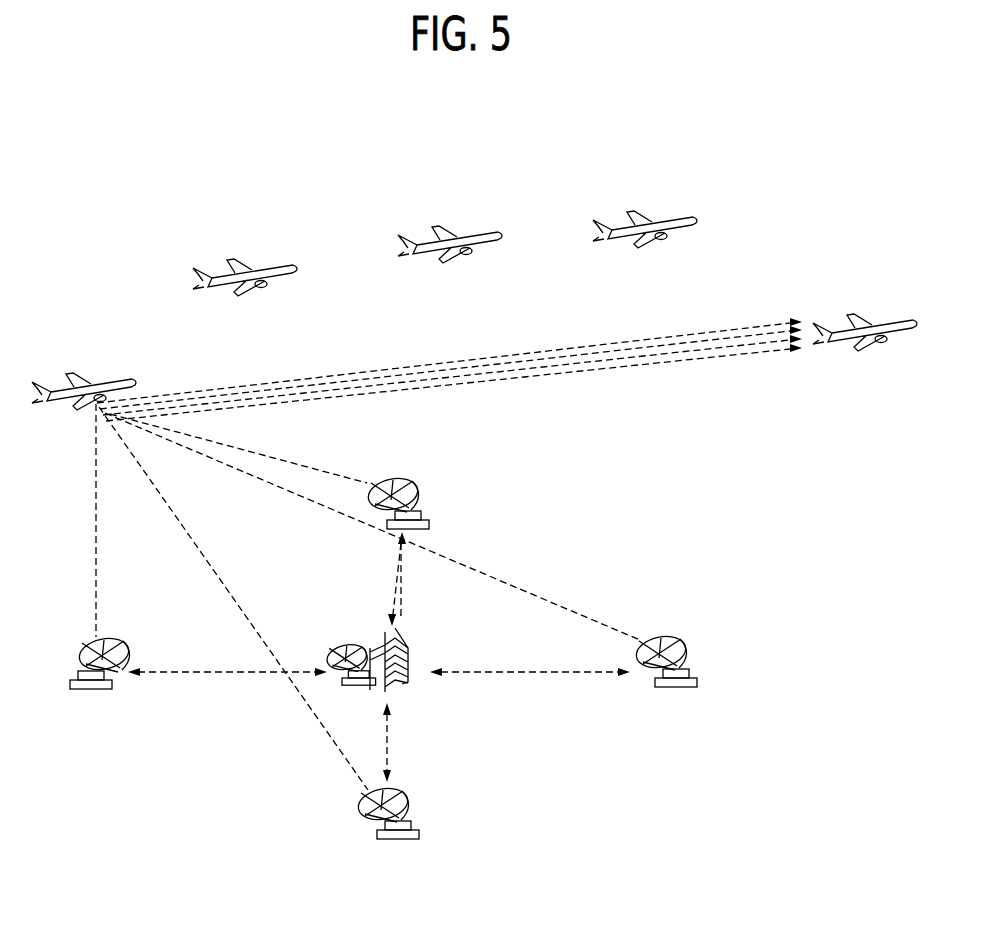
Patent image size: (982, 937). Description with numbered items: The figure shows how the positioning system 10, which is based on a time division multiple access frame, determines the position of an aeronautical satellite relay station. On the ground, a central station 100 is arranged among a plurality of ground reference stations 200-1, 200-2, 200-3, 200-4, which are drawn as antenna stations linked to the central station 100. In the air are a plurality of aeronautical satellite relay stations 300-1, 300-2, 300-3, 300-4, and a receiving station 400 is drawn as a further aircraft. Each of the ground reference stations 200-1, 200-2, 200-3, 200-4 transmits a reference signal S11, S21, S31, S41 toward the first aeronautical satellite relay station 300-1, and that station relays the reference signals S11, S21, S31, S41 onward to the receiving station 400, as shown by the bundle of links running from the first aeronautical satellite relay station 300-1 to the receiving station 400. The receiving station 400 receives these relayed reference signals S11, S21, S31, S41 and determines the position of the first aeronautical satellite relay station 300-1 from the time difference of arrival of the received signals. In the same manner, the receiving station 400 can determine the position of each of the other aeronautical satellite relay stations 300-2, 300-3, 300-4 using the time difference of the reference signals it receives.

The positioning system 10 is at (960, 121).
The central station 100 is at (405, 684).
The ground reference station 200-1 is at (77, 668).
The ground reference station 200-2 is at (410, 838).
The ground reference station 200-3 is at (422, 510).
The ground reference station 200-4 is at (689, 668).
The first aeronautical satellite relay station 300-1 is at (66, 373).
The aeronautical satellite relay station 300-2 is at (227, 260).
The aeronautical satellite relay station 300-3 is at (432, 227).
The aeronautical satellite relay station 300-4 is at (627, 212).
The receiving station 400 is at (847, 315).
The reference signal S11 is at (74, 520).
The reference signal S21 is at (233, 598).
The reference signal S31 is at (238, 448).
The reference signal S41 is at (372, 526).